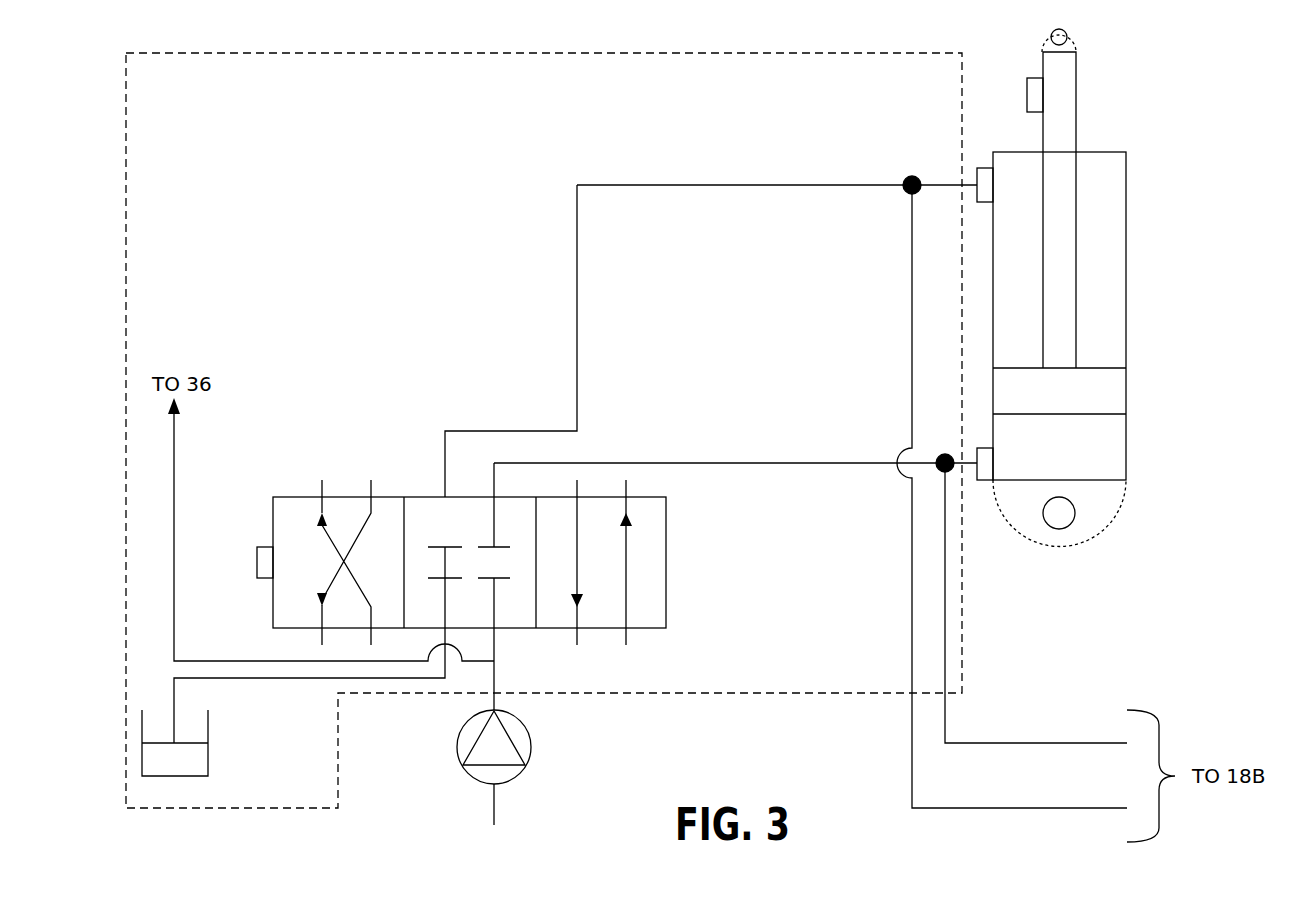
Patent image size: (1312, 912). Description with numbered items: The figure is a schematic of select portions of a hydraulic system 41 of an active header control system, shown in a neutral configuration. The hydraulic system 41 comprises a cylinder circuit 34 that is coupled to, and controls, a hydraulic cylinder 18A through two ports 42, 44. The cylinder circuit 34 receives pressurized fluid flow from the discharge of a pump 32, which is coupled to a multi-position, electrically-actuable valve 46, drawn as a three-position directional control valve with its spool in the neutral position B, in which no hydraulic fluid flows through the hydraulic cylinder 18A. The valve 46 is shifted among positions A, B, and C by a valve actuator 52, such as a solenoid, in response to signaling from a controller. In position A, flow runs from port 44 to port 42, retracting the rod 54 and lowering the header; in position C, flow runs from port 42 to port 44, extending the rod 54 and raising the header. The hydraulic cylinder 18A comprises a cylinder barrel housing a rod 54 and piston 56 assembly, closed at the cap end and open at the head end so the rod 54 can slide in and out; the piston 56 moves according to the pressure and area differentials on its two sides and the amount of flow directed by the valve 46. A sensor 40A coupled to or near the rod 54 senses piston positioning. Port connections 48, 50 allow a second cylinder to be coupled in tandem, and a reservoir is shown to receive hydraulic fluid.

The cylinder circuit 34 is at (544, 430).
The pump 32 is at (532, 749).
The valve 46 is at (666, 563).
The valve actuator 52 is at (257, 562).
The port connection 48 is at (908, 176).
The port connection 50 is at (945, 454).
The hydraulic system 41 is at (1238, 113).
The hydraulic cylinder 18A is at (1126, 168).
The rod 54 is at (1077, 233).
The piston 56 is at (1126, 391).
The sensor 40A is at (1027, 95).
The port 44 is at (985, 168).
The port 42 is at (985, 480).